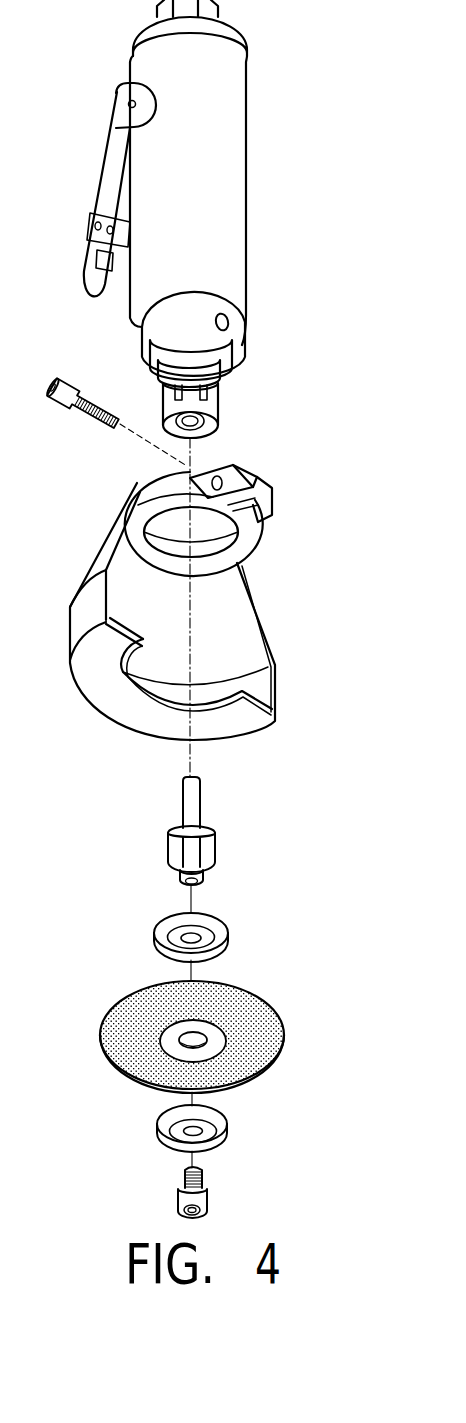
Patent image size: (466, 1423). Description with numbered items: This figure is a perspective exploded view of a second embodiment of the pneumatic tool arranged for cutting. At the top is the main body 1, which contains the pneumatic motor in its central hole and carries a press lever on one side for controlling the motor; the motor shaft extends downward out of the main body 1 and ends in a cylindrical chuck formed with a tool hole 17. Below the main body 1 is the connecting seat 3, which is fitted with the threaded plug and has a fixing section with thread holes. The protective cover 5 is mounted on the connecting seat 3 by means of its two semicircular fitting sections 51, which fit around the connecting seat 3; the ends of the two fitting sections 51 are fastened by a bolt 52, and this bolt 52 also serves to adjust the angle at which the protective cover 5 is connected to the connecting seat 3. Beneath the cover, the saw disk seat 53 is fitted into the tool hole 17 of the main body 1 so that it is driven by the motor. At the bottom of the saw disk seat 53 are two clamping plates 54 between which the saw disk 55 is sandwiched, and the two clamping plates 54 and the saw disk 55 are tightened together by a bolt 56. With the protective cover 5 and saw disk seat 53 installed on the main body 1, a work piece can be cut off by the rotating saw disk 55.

The main body 1 is at (217, 226).
The connecting seat 3 is at (196, 319).
The tool hole 17 is at (193, 422).
The protective cover 5 is at (242, 623).
The semicircular fitting sections 51 is at (158, 490).
The bolt 52 is at (80, 392).
The saw disk seat 53 is at (193, 807).
The clamping plates 54 is at (218, 933).
The saw disk 55 is at (280, 1037).
The bolt 56 is at (208, 1200).